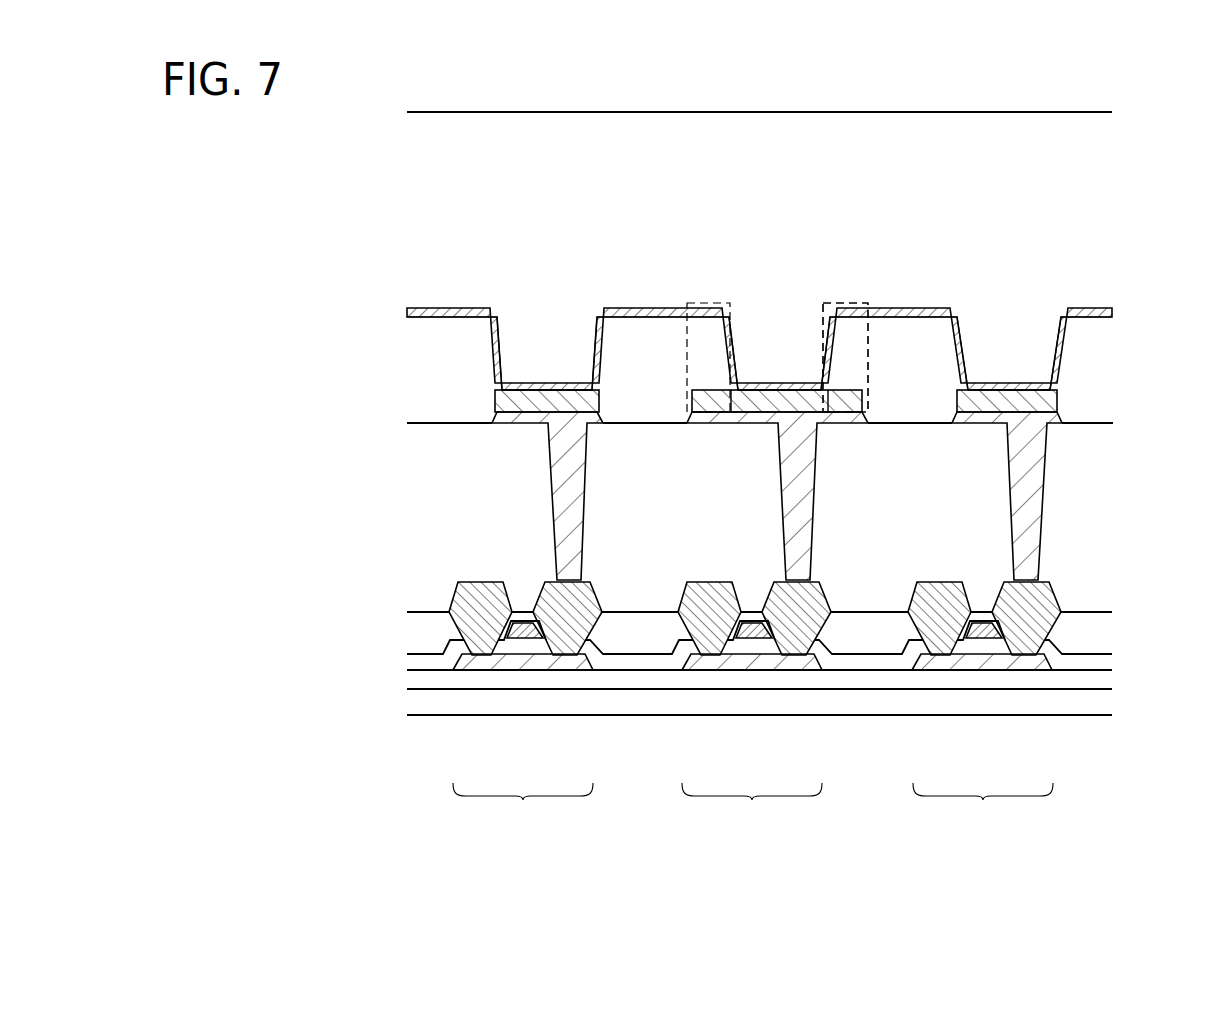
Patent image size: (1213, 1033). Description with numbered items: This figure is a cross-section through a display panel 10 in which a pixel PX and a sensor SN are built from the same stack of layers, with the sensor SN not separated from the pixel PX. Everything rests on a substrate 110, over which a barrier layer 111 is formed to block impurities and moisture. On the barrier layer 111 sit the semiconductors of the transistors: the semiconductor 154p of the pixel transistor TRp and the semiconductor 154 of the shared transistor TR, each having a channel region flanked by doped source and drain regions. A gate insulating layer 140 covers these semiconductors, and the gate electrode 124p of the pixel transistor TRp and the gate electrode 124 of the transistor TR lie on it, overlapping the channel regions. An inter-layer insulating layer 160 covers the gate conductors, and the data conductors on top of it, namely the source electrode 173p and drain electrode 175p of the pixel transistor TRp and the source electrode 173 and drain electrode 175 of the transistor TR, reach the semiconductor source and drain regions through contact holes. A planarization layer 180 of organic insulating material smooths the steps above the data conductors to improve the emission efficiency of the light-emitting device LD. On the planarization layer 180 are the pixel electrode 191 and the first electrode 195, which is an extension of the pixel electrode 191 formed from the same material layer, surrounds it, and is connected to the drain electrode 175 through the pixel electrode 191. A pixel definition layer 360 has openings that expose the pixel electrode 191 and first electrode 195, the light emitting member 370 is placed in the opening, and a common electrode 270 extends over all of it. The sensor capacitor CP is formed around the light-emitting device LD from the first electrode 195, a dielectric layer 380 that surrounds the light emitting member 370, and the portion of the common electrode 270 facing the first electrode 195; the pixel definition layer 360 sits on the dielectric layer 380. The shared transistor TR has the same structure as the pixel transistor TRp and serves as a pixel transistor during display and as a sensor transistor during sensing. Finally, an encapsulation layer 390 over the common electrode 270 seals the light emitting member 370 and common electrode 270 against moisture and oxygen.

The display panel 10 is at (1013, 103).
The substrate 110 is at (1093, 703).
The barrier layer 111 is at (1093, 678).
The gate electrode 124 is at (744, 640).
The gate electrode 124p is at (515, 640).
The gate insulating layer 140 is at (1093, 662).
The semiconductor 154 is at (774, 660).
The semiconductor 154p is at (545, 660).
The inter-layer insulating layer 160 is at (1093, 637).
The source electrode 173 is at (709, 612).
The source electrode 173p is at (480, 612).
The drain electrode 175 is at (796, 612).
The drain electrode 175p is at (567, 612).
The planarization layer 180 is at (1092, 490).
The pixel electrode 191 is at (583, 391).
The first electrode 195 is at (703, 413).
The common electrode 270 is at (1112, 313).
The pixel definition layer 360 is at (1092, 360).
The light emitting member 370 is at (540, 386).
The dielectric layer 380 is at (850, 405).
The encapsulation layer 390 is at (1092, 195).
The sensor capacitor CP is at (863, 289).
The light-emitting device LD is at (772, 365).
The transistor TR is at (757, 616).
The pixel transistor TRp is at (525, 633).
The pixel PX is at (753, 807).
The sensor SN is at (752, 807).